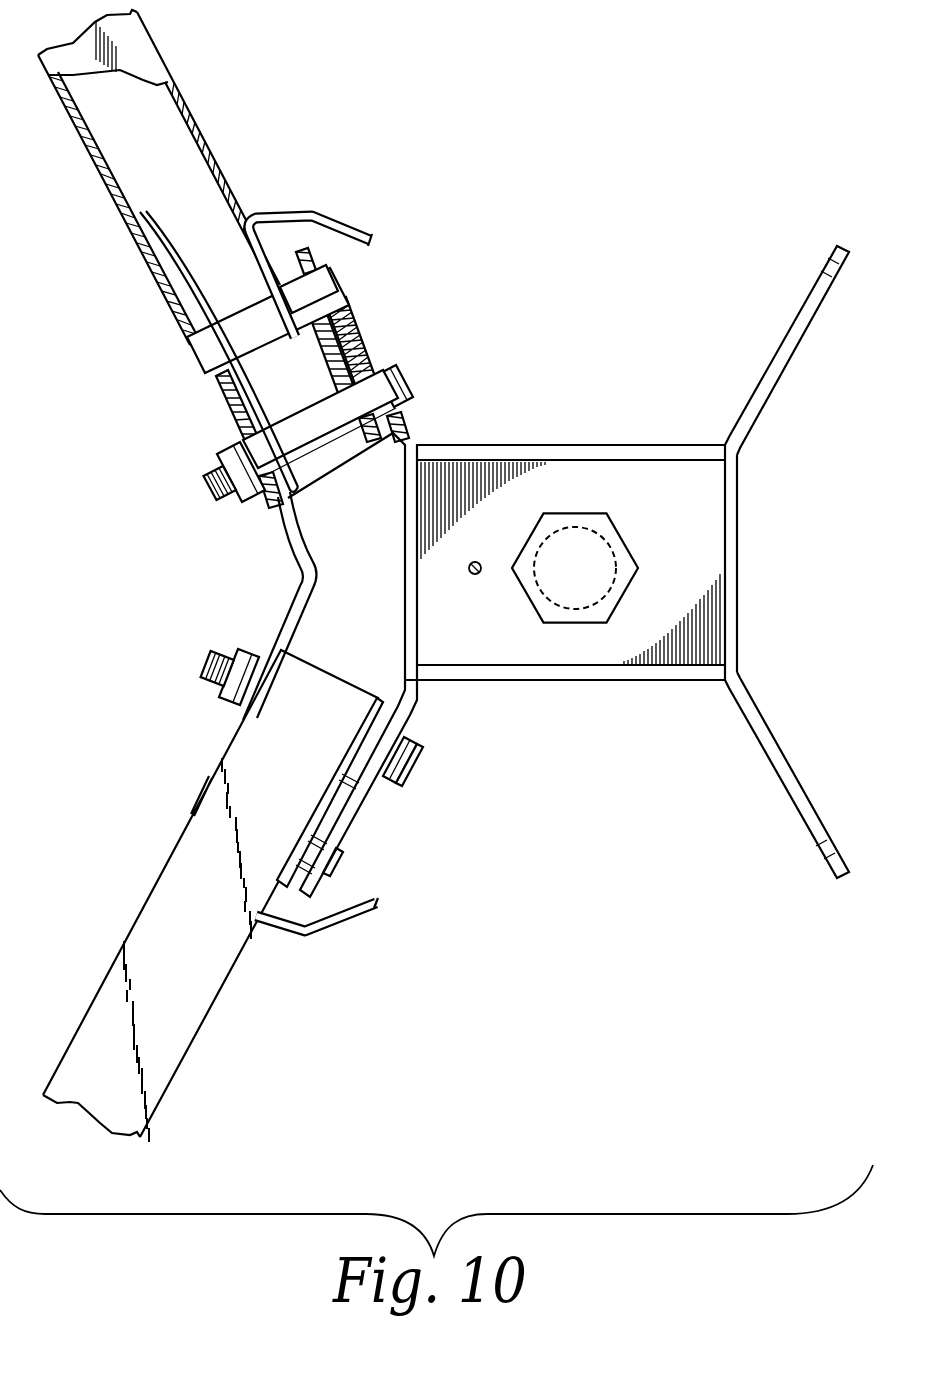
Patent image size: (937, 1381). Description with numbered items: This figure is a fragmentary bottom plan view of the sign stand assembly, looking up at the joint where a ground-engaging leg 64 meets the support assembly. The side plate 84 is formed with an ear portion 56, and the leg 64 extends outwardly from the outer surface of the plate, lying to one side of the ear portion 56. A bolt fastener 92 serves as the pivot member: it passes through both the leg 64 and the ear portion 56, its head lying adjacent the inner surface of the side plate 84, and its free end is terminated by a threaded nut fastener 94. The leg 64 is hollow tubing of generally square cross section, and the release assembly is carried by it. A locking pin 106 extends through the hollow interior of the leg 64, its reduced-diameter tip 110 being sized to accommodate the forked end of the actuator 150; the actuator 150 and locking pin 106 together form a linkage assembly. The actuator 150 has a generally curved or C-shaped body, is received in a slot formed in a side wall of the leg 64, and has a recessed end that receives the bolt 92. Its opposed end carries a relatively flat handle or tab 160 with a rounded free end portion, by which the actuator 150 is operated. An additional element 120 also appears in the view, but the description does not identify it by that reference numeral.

The ear portions 56 is at (368, 337).
The ground-engaging legs 64 is at (132, 33).
The side plate 84 is at (401, 573).
The bolt fastener 92 is at (413, 381).
The threaded nut fastener 94 is at (216, 462).
The locking pin 106 is at (253, 293).
The tip 110 is at (330, 282).
The probe 120 is at (190, 243).
The actuator 150 is at (287, 220).
The tab 160 is at (347, 230).